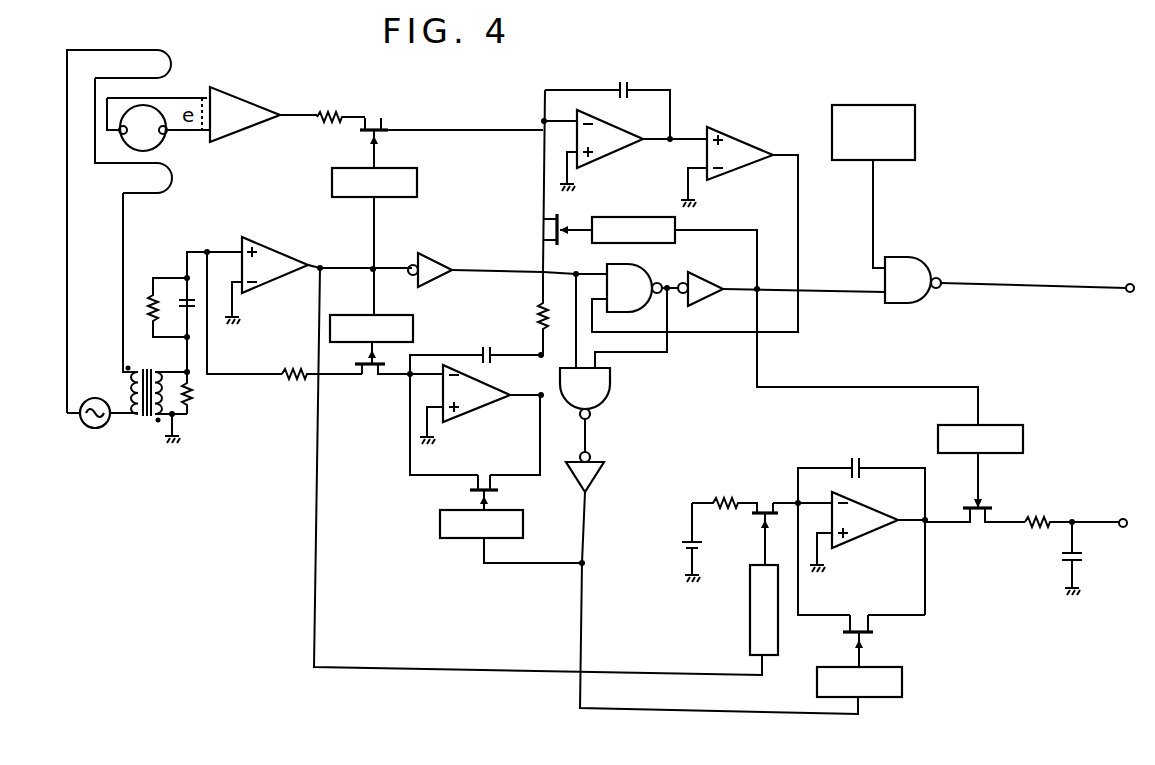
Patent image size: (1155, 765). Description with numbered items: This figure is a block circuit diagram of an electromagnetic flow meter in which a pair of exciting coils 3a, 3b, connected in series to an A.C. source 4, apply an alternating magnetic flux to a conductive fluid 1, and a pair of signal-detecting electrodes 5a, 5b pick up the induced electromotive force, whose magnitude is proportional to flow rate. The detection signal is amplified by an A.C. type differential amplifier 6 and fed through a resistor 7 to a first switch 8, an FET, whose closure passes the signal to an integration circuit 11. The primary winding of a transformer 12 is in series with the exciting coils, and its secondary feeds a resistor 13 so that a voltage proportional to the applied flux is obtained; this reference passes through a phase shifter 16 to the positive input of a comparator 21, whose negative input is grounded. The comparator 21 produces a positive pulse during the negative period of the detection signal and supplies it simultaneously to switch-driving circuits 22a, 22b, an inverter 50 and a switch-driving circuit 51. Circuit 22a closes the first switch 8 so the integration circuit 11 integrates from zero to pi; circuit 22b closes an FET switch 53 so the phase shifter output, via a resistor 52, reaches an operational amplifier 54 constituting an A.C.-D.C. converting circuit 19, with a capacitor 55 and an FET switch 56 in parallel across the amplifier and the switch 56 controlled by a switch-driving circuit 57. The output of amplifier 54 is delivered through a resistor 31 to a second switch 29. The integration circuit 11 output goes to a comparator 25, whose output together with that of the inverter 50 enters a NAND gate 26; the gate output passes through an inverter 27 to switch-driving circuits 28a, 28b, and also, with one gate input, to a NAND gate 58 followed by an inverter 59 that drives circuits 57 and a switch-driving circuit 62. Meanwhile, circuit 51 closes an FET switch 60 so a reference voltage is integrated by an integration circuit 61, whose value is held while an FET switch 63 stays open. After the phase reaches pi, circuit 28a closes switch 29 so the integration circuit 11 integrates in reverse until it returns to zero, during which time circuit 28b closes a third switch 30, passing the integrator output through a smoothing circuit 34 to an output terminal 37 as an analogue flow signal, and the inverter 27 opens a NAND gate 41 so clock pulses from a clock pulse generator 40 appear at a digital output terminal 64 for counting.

The conductive fluid 1 is at (137, 145).
The exciting coil 3a is at (163, 62).
The exciting coil 3b is at (163, 180).
The A.C. source 4 is at (95, 428).
The signal-detecting electrode 5a is at (167, 133).
The signal-detecting electrode 5b is at (119, 135).
The A.C. type differential amplifier 6 is at (236, 108).
The resistor 7 is at (331, 110).
The first switch 8 is at (373, 112).
The integration circuit 11 is at (648, 124).
The transformer 12 is at (145, 372).
The resistor 13 is at (191, 394).
The phase shifter 16 is at (182, 328).
The A.C.-D.C. converting circuit 19 is at (475, 417).
The comparator 21 is at (280, 232).
The switch-driving circuit 22a is at (417, 183).
The switch-driving circuit 22b is at (413, 329).
The comparator 25 is at (745, 122).
The NAND gate 26 is at (644, 276).
The inverter 27 is at (706, 279).
The switch-driving circuit 28a is at (620, 217).
The switch-driving circuit 28b is at (1023, 439).
The second switch 29 is at (544, 228).
The third switch 30 is at (978, 528).
The resistor 31 is at (540, 318).
The smoothing circuit 34 is at (1047, 518).
The output terminal 37 is at (1122, 519).
The clock pulse generator 40 is at (915, 130).
The NAND gate 41 is at (930, 256).
The inverter 50 is at (436, 263).
The switch-driving circuit 51 is at (750, 603).
The resistor 52 is at (293, 381).
The FET switch 53 is at (372, 380).
The operational amplifier 54 is at (480, 385).
The capacitor 55 is at (485, 345).
The FET switch 56 is at (496, 482).
The switch-driving circuit 57 is at (523, 524).
The NAND gate 58 is at (610, 400).
The inverter 59 is at (592, 476).
The FET switch 60 is at (768, 500).
The integration circuit 61 is at (902, 505).
The switch-driving circuit 62 is at (902, 683).
The FET switch 63 is at (856, 616).
The digital output terminal 64 is at (1130, 284).